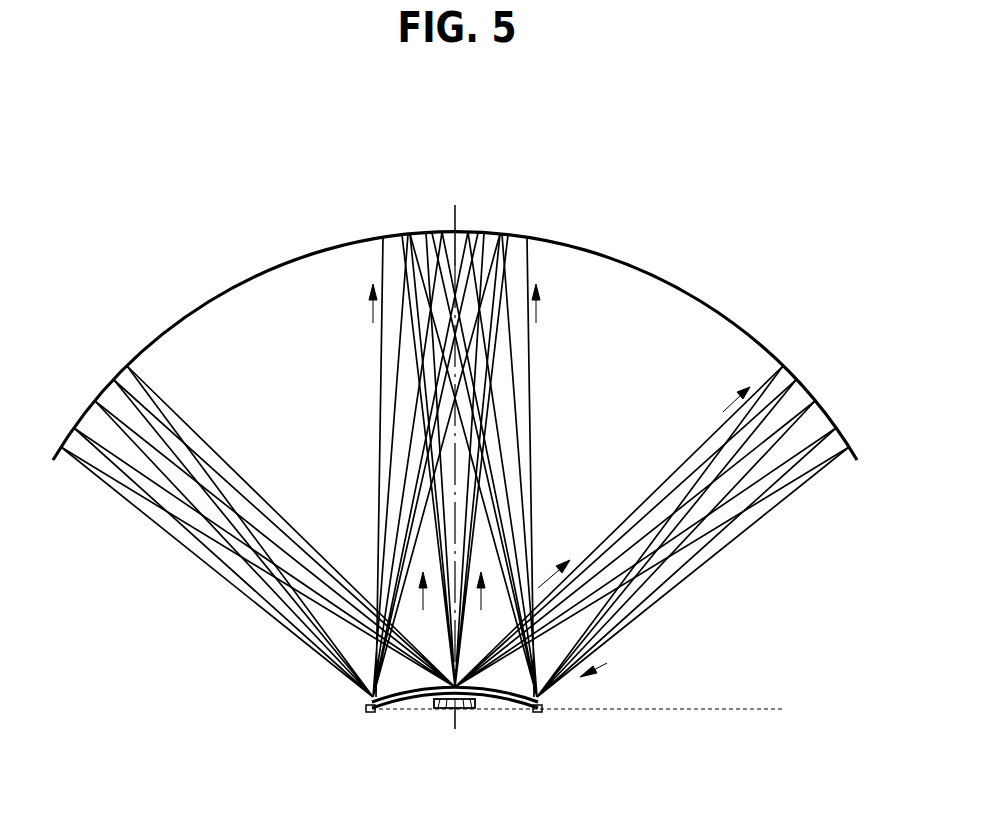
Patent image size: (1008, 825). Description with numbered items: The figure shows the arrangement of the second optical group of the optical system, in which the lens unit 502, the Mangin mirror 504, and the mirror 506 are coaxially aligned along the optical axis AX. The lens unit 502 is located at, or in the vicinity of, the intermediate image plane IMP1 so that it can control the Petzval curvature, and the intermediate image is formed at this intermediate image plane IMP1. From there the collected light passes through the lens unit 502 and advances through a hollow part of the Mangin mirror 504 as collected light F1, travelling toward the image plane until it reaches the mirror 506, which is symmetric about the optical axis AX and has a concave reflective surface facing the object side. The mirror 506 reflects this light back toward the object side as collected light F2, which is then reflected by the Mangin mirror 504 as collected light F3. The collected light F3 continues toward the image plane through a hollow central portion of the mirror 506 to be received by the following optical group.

The mirror 506 is at (237, 283).
The Mangin mirror 504 is at (545, 710).
The lens unit 502 is at (433, 706).
The optical axis AX is at (455, 454).
The intermediate image plane IMP1 is at (605, 712).
The collected light F1 is at (490, 645).
The collected light F2 is at (575, 645).
The collected light F3 is at (492, 562).